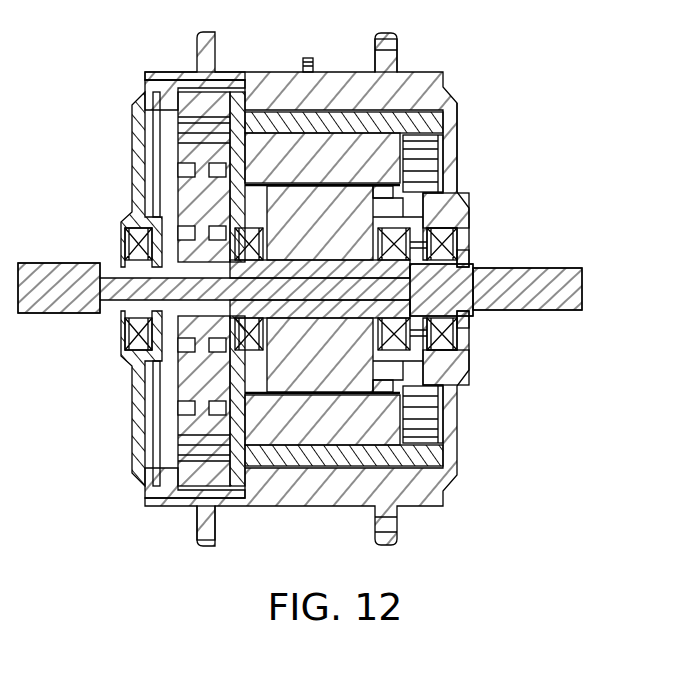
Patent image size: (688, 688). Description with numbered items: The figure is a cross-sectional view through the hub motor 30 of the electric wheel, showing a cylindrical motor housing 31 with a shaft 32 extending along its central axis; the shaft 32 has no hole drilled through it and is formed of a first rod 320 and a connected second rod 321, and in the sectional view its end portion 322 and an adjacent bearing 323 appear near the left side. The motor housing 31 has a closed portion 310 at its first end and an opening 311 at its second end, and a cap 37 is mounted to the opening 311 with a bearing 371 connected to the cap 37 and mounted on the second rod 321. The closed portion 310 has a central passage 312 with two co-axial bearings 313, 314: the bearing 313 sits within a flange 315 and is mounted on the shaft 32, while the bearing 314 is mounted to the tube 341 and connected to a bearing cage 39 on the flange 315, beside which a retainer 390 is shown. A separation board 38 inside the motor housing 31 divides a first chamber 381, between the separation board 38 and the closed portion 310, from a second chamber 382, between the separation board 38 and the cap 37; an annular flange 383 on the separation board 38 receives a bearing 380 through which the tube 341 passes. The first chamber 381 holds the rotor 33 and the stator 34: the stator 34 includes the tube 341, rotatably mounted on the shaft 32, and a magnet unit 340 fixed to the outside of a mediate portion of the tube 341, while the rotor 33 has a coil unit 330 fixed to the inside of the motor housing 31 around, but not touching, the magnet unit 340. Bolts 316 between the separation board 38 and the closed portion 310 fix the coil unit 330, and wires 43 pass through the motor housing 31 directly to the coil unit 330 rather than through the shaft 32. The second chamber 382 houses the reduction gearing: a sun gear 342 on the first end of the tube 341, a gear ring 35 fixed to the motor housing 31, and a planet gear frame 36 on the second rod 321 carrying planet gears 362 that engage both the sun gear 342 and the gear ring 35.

The hub motor 30 is at (312, 285).
The motor housing 31 is at (317, 285).
The opening 311 is at (163, 80).
The bolts 316 is at (375, 46).
The closed portion 310 is at (457, 150).
The shaft 32 is at (312, 275).
The first rod 320 is at (572, 268).
The second rod 321 is at (60, 313).
The shaft hub 322 is at (472, 316).
The bearing 323 is at (122, 243).
The rotor 33 is at (382, 445).
The coil unit 330 is at (372, 130).
The stator 34 is at (381, 215).
The magnet unit 340 is at (410, 170).
The tube 341 is at (457, 232).
The sun gear 342 is at (163, 360).
The gear ring 35 is at (187, 100).
The planet gear frame 36 is at (176, 158).
The planet gears 362 is at (172, 427).
The cap 37 is at (132, 120).
The bearing 371 is at (140, 217).
The separation board 38 is at (247, 150).
The bearing 380 is at (247, 228).
The first chamber 381 is at (353, 400).
The second chamber 382 is at (218, 493).
The annular flange 383 is at (287, 400).
The bearing cage 39 is at (455, 230).
The retainer 390 is at (457, 256).
The wires 43 is at (308, 58).
The passage 312 is at (472, 312).
The bearing 313 is at (462, 348).
The bearing 314 is at (465, 365).
The flange 315 is at (440, 393).